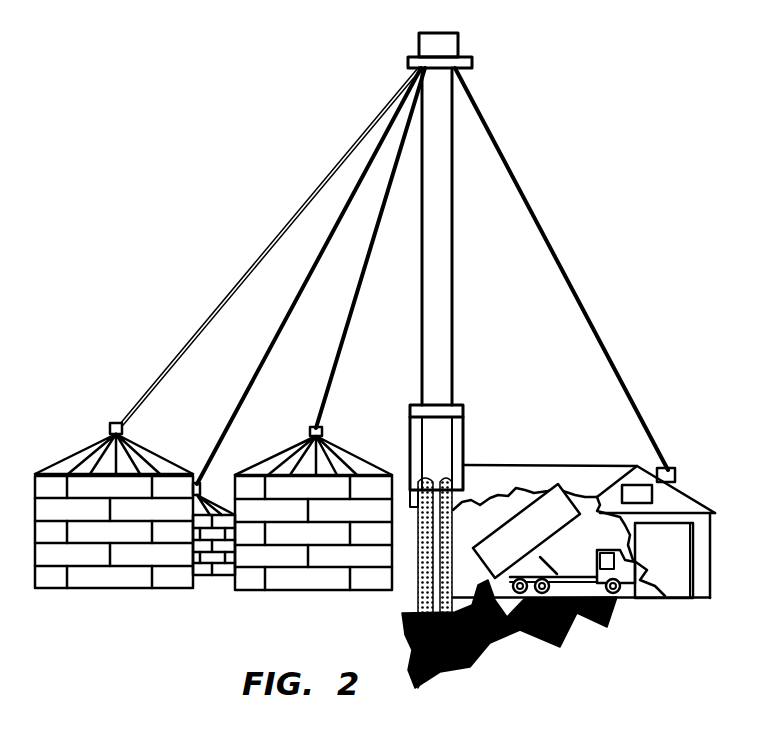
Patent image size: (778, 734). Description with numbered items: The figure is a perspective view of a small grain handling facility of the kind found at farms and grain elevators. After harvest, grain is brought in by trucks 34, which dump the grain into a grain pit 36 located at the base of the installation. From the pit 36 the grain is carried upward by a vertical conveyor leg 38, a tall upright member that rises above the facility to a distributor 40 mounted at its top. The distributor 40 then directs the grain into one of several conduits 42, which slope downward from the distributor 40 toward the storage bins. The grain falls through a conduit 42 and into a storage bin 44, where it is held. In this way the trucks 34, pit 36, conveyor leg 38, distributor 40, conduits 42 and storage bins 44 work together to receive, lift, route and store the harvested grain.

The truck 34 is at (650, 598).
The grain pit 36 is at (402, 613).
The vertical conveyor leg 38 is at (453, 337).
The distributor 40 is at (458, 50).
The conduit 42 is at (280, 226).
The storage bin 44 is at (95, 557).